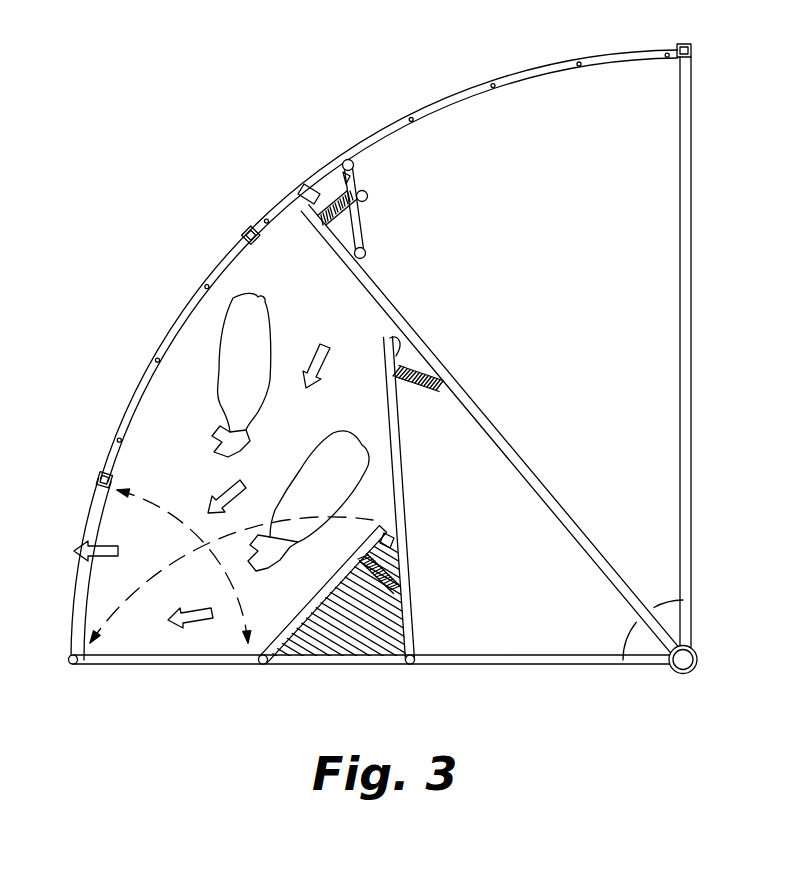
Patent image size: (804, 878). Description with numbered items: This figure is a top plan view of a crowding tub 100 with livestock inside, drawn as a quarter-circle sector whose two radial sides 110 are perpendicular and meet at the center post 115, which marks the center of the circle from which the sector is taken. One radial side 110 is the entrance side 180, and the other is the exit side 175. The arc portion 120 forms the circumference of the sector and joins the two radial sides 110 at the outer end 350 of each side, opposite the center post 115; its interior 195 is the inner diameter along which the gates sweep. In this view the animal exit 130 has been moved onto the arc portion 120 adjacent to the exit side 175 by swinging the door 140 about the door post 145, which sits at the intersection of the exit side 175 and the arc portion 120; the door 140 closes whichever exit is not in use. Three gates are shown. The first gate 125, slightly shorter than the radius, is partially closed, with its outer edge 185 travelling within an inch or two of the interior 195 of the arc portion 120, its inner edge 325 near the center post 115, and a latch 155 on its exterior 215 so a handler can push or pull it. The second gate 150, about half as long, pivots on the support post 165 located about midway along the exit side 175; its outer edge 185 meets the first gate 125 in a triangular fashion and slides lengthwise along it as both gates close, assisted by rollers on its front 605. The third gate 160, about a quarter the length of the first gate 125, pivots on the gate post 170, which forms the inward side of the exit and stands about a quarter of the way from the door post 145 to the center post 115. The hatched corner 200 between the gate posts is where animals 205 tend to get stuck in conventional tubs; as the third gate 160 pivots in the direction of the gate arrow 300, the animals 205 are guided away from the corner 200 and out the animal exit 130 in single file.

The crowding tub 100 is at (206, 141).
The radial side 110 is at (424, 413).
The center post 115 is at (685, 664).
The arc portion 120 is at (453, 92).
The first gate 125 is at (503, 430).
The animal exit 130 is at (113, 588).
The door 140 is at (78, 632).
The door post 145 is at (72, 665).
The second gate 150 is at (409, 474).
The latch 155 is at (362, 180).
The third gate 160 is at (323, 597).
The support post 165 is at (410, 665).
The gate post 170 is at (263, 665).
The exit side 175 is at (527, 665).
The entrance side 180 is at (693, 510).
The outer edge 185 is at (315, 191).
The interior 195 is at (540, 76).
The corner 200 is at (377, 632).
The animals 205 is at (264, 363).
The exterior 215 is at (441, 367).
The gate arrow 300 is at (110, 617).
The inner edge 325 is at (635, 607).
The outer end 350 is at (693, 57).
The front 605 is at (428, 561).